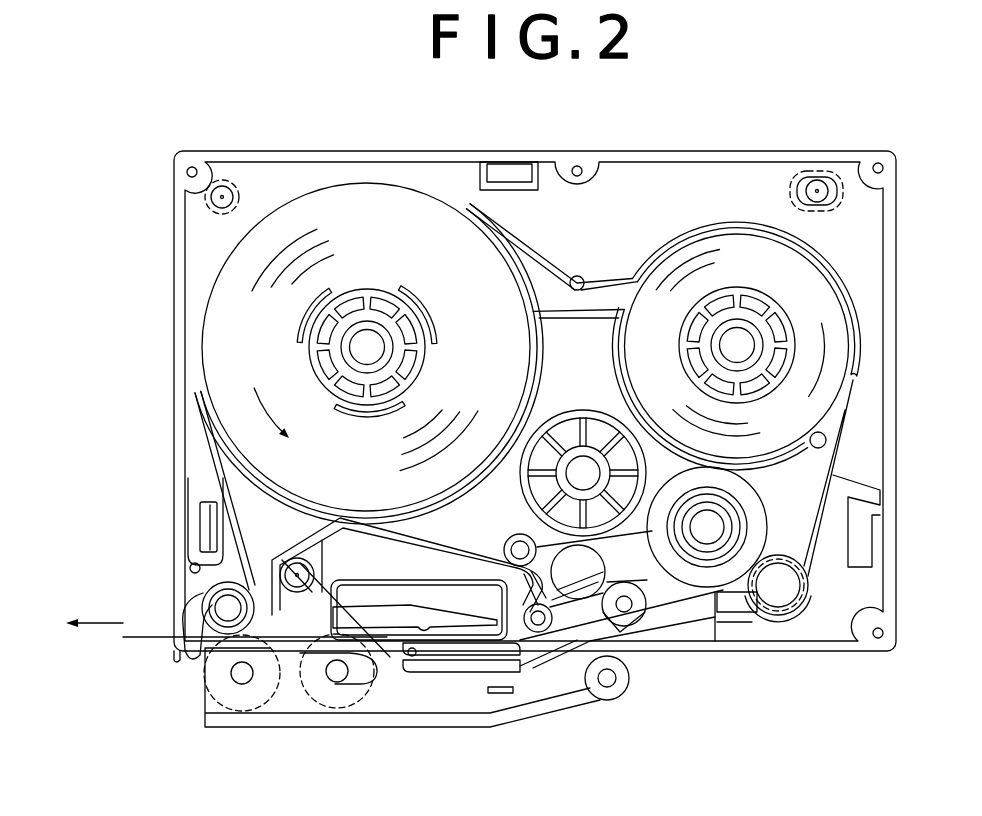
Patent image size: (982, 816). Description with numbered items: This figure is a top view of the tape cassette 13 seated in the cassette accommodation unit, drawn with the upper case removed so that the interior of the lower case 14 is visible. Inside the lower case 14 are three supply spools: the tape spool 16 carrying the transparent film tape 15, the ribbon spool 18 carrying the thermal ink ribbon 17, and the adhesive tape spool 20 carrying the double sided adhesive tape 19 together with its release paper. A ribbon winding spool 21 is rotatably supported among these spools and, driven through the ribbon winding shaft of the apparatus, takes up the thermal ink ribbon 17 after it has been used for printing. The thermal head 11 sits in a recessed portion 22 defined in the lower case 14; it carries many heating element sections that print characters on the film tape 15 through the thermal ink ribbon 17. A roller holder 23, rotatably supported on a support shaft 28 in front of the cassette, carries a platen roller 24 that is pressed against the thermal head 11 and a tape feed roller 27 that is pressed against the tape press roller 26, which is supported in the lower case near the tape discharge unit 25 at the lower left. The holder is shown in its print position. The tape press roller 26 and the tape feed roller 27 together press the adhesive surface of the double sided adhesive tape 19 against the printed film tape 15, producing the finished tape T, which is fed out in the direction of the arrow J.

The thermal head 11 is at (388, 627).
The tape cassette 13 is at (899, 391).
The lower case 14 is at (898, 333).
The transparent film tape 15 is at (738, 248).
The tape spool 16 is at (783, 298).
The thermal ink ribbon 17 is at (747, 497).
The ribbon spool 18 is at (747, 528).
The double sided adhesive tape 19 is at (357, 205).
The adhesive tape spool 20 is at (383, 288).
The ribbon winding spool 21 is at (590, 410).
The recessed portion 22 is at (493, 607).
The roller holder 23 is at (489, 715).
The platen roller 24 is at (330, 712).
The tape discharge unit 25 is at (183, 630).
The tape press roller 26 is at (207, 598).
The tape feed roller 27 is at (241, 712).
The support shaft 28 is at (608, 682).
The tape T is at (155, 640).
The arrow J is at (94, 613).